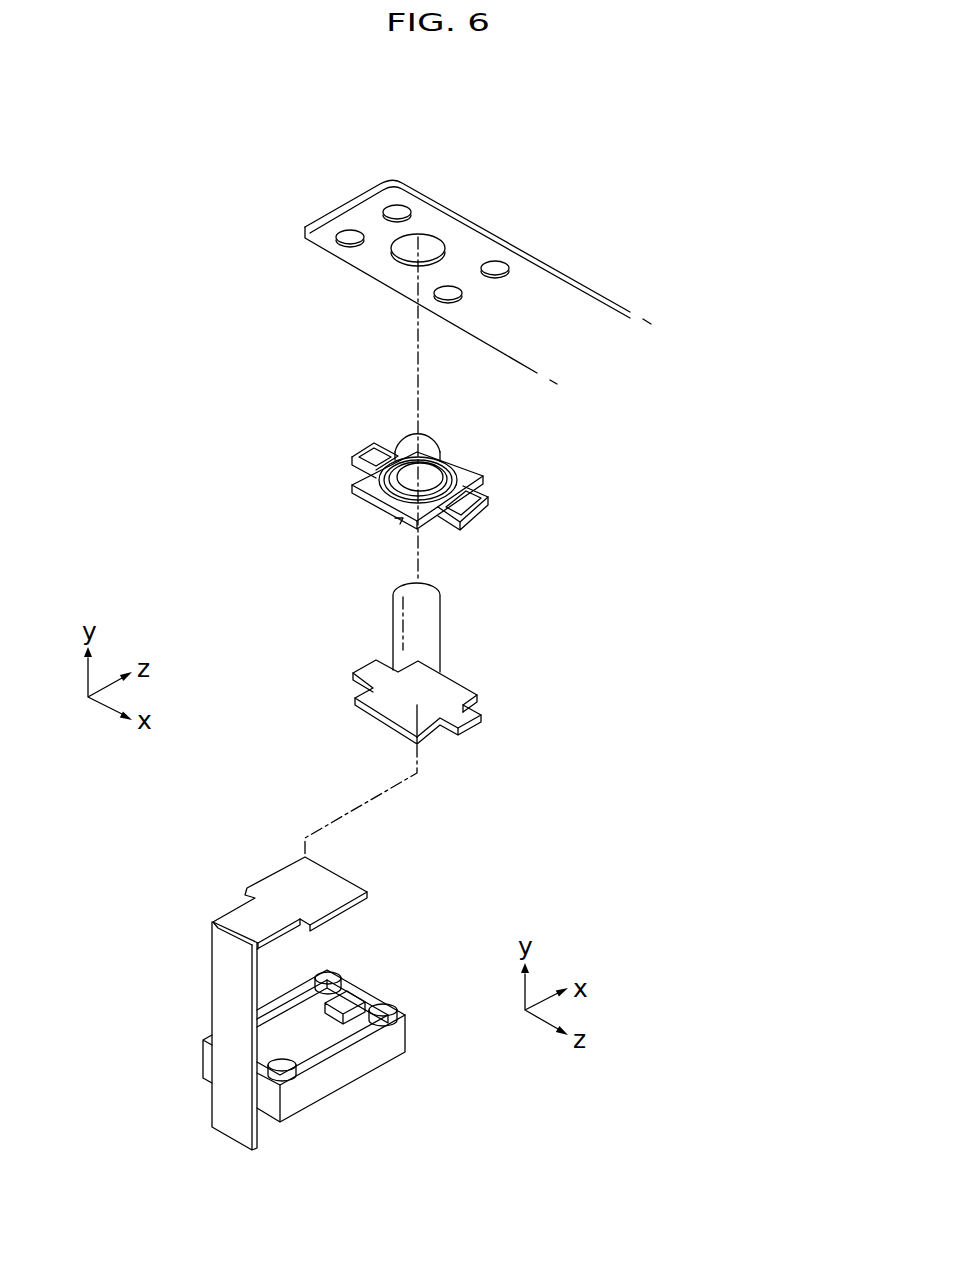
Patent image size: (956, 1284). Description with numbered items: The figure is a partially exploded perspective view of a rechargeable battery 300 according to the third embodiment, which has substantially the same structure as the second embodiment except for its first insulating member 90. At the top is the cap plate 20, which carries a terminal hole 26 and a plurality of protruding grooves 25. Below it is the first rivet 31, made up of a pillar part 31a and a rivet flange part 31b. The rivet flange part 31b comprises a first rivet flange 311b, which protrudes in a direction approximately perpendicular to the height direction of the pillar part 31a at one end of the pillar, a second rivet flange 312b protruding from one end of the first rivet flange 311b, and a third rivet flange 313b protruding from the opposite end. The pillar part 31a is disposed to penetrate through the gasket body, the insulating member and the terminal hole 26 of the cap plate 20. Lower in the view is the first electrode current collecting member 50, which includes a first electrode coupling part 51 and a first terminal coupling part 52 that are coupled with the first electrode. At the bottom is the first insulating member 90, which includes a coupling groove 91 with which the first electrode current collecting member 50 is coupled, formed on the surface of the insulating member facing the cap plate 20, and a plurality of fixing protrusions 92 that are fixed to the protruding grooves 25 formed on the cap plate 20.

The rechargeable battery 300 is at (190, 160).
The cap plate 20 is at (495, 205).
The protruding grooves 25 is at (350, 242).
The terminal hole 26 is at (428, 244).
The first rivet 31 is at (522, 689).
The pillar part 31a is at (425, 627).
The rivet flange part 31b is at (263, 638).
The first rivet flange 311b is at (372, 692).
The second rivet flange 312b is at (362, 670).
The third rivet flange 313b is at (453, 733).
The first electrode current collecting member 50 is at (366, 876).
The first electrode coupling part 51 is at (280, 888).
The first terminal coupling part 52 is at (232, 1105).
The first insulating member 90 is at (400, 968).
The coupling groove 91 is at (310, 1040).
The fixing protrusions 92 is at (388, 1007).